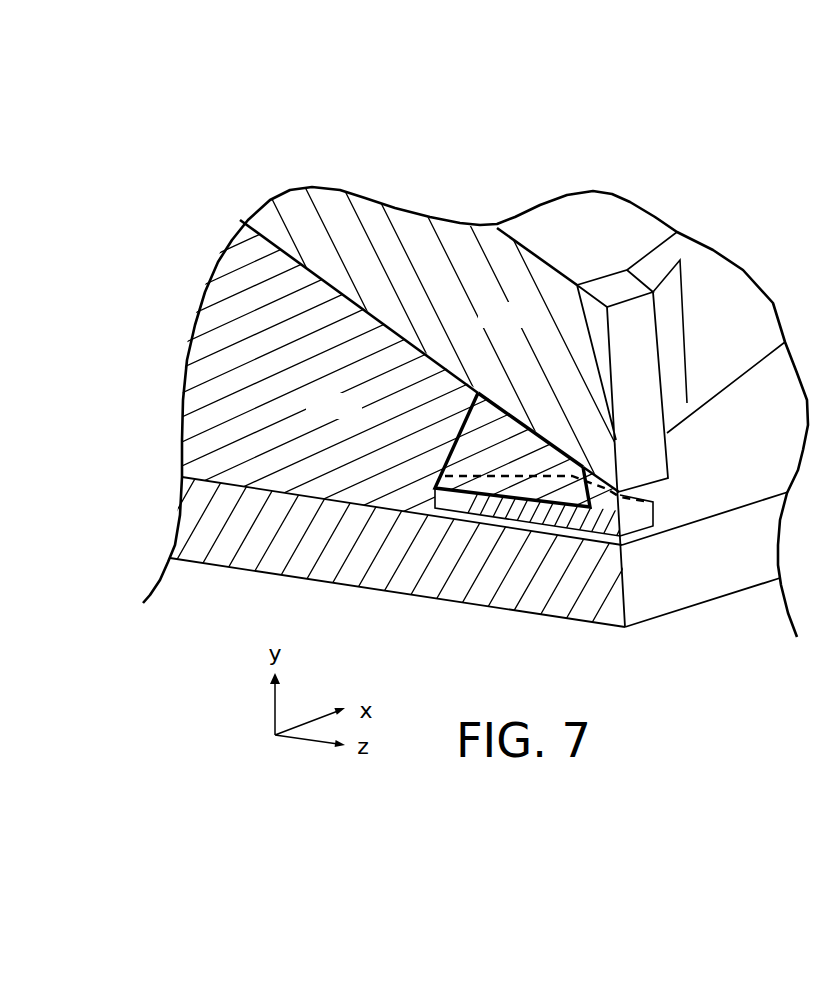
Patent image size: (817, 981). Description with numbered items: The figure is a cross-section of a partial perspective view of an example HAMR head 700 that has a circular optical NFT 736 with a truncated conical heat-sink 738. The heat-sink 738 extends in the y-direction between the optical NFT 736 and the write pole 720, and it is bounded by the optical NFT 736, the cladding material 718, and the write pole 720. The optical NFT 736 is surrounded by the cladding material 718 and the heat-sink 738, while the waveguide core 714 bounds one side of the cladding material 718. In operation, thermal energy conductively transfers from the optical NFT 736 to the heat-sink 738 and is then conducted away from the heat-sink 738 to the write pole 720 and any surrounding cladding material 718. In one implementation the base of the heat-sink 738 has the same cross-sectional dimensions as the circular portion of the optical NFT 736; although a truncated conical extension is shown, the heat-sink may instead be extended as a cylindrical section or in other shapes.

The HAMR head 700 is at (158, 150).
The waveguide core 714 is at (735, 566).
The cladding material 718 is at (357, 423).
The write pole 720 is at (526, 330).
The optical NFT 736 is at (660, 560).
The heat-sink 738 is at (443, 450).